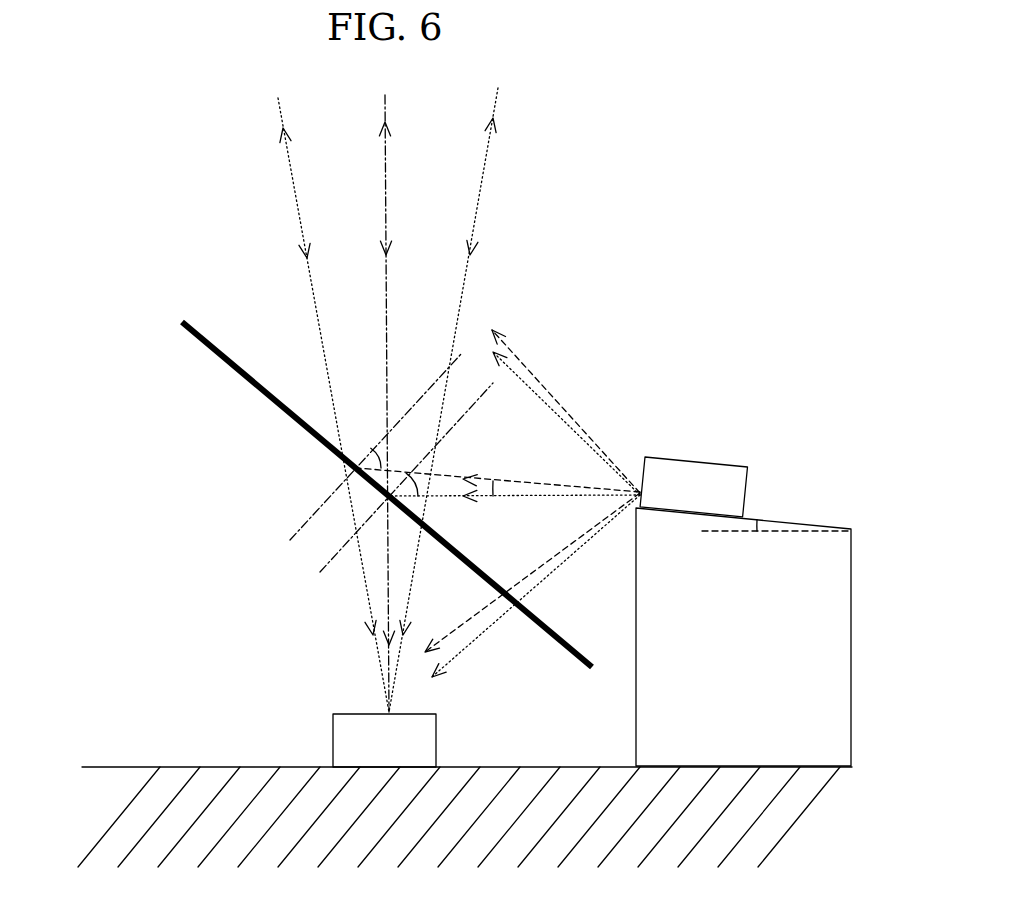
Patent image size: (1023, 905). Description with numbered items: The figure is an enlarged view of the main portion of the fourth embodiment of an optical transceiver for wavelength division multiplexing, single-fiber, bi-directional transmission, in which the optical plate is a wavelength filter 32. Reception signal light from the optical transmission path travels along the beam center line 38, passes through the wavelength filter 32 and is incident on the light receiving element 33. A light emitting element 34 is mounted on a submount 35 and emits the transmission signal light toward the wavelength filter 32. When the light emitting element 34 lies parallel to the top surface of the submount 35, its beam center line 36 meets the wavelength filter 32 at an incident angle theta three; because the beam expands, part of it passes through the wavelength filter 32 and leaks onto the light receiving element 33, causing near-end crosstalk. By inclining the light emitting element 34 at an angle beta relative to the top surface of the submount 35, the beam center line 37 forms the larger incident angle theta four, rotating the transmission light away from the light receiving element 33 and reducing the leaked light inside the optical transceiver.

The wavelength filter 32 is at (243, 377).
The light receiving element 33 is at (333, 740).
The light emitting element 34 is at (723, 463).
The submount 35 is at (852, 613).
The beam center line 36 is at (548, 495).
The beam center line 37 is at (525, 483).
The beam center line 38 is at (380, 200).